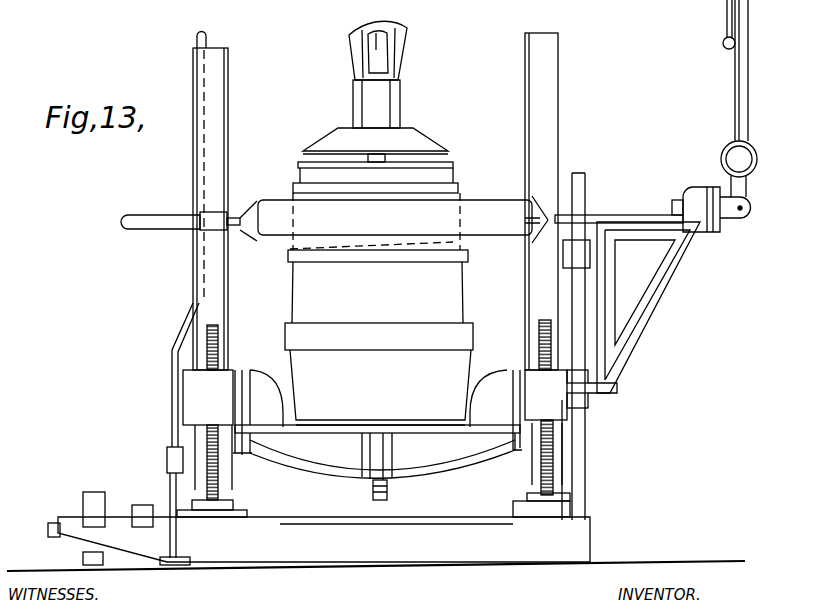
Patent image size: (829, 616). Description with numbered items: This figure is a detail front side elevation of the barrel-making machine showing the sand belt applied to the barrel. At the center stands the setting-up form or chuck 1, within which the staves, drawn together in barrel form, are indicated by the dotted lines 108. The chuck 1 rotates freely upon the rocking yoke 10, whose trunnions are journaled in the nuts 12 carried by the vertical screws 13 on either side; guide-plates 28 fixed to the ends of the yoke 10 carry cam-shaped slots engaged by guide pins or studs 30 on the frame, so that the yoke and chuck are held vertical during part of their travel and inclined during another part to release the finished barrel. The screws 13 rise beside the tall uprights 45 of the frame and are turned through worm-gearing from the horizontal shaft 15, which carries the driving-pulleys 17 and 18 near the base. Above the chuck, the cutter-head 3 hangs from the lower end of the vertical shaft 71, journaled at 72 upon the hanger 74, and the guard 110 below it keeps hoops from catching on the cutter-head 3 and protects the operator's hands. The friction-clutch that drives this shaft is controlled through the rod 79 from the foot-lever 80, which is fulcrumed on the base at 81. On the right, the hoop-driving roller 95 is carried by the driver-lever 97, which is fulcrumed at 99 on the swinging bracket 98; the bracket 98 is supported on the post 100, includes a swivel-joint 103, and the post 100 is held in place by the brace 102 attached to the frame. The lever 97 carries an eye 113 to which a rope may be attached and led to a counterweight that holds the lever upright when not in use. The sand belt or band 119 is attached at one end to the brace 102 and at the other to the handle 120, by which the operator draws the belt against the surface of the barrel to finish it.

The setting-up form or chuck 1 is at (380, 387).
The cutter-head 3 is at (452, 162).
The rocking yoke 10 is at (377, 462).
The nuts 12 is at (375, 430).
The vertical screws 13 is at (373, 413).
The horizontal shaft 15 is at (52, 530).
The driving-pulley 17 is at (94, 528).
The driving-pulley 18 is at (142, 516).
The guide-plates 28 is at (377, 403).
The guide pins or studs 30 is at (379, 464).
The standard post 45 is at (375, 201).
The vertical shaft 71 is at (378, 52).
The journal 72 is at (376, 104).
The hanger 74 is at (388, 50).
The rod 79 is at (181, 375).
The foot-lever 80 is at (181, 552).
The fulcrum 81 is at (170, 503).
The hoop-driving roller 95 is at (751, 169).
The driver-lever 97 is at (753, 70).
The swinging bracket 98 is at (627, 298).
The fulcrum 99 is at (738, 218).
The post 100 is at (582, 468).
The brace 102 is at (577, 254).
The swivel-joint 103 is at (696, 201).
The dotted lines 108 is at (379, 271).
The guard 110 is at (375, 141).
The eye 113 is at (712, 26).
The sand belt or band 119 is at (394, 219).
The handle 120 is at (180, 215).